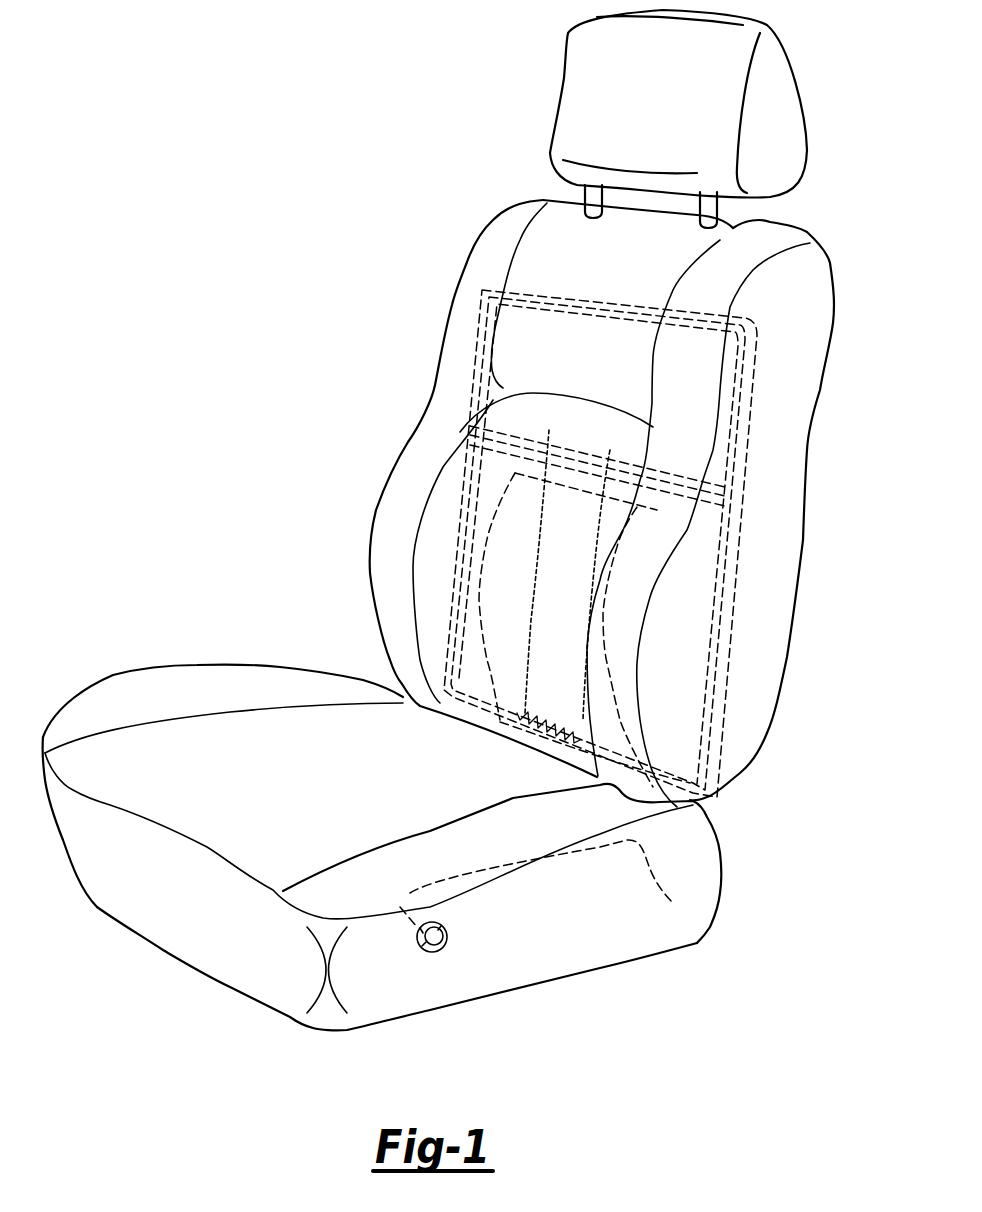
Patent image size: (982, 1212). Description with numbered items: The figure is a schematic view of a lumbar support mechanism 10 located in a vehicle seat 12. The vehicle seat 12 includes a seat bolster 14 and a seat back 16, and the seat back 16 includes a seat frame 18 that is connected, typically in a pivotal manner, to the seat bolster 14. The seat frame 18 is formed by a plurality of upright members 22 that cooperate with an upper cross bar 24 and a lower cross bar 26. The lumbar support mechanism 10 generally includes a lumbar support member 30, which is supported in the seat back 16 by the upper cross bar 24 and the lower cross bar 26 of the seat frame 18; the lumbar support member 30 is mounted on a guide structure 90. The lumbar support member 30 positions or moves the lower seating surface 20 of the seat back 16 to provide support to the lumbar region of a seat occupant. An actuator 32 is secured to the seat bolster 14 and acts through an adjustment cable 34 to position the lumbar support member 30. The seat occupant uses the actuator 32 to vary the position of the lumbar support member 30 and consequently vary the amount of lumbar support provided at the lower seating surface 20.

The lumbar support mechanism 10 is at (490, 600).
The vehicle seat 12 is at (790, 743).
The seat bolster 14 is at (603, 953).
The seat back 16 is at (802, 410).
The seat frame 18 is at (573, 290).
The lower seating surface 20 is at (548, 655).
The upright members 22 is at (480, 340).
The upper cross bar 24 is at (525, 433).
The lower cross bar 26 is at (512, 716).
The lumbar support member 30 is at (490, 548).
The actuator 32 is at (428, 975).
The adjustment cable 34 is at (552, 883).
The guide structure 90 is at (598, 438).